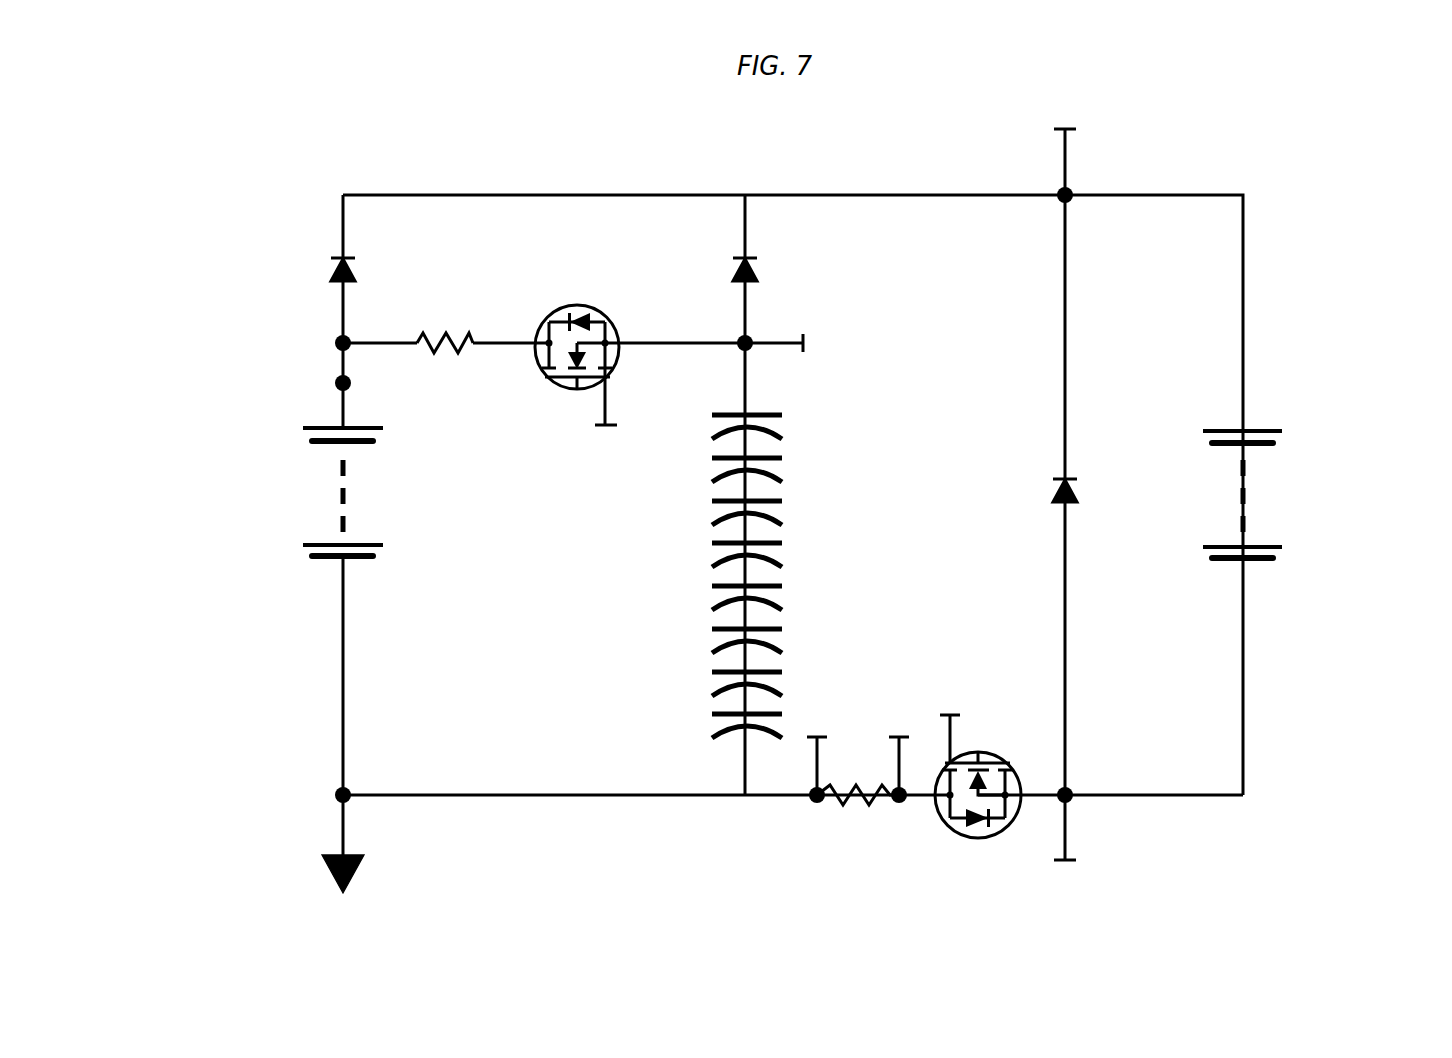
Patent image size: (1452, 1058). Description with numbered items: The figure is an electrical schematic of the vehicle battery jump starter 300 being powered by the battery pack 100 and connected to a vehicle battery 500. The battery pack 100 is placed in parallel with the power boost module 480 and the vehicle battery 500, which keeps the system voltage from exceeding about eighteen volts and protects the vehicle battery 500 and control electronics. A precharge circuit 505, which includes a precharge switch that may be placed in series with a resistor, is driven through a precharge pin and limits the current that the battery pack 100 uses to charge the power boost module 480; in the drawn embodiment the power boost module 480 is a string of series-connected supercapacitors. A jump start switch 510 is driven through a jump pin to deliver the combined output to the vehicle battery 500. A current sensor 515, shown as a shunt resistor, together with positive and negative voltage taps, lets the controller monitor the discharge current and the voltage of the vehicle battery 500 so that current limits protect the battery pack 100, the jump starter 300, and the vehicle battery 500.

The vehicle battery jump starter 300 is at (299, 120).
The battery pack 100 is at (265, 479).
The precharge circuit 505 is at (473, 422).
The power boost module 480 is at (672, 573).
The current sensor 515 is at (850, 803).
The jump start switch 510 is at (978, 836).
The vehicle battery 500 is at (1303, 511).